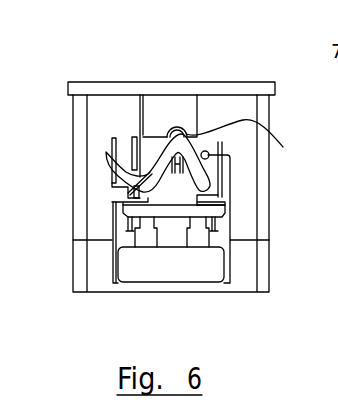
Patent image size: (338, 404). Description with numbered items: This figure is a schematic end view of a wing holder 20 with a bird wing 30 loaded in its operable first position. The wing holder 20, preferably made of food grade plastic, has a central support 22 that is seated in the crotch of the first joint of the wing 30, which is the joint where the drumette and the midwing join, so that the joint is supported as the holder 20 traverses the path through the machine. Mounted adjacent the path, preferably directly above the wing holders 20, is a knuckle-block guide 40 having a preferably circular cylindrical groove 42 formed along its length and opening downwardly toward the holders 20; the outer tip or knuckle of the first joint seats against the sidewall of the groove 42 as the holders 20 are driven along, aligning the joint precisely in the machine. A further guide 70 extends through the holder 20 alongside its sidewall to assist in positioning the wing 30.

The wing holder 20 is at (147, 137).
The central support 22 is at (177, 182).
The bird wing 30 is at (116, 168).
The knuckle-block guide 40 is at (183, 107).
The groove 42 is at (245, 140).
The guide 70 is at (117, 137).